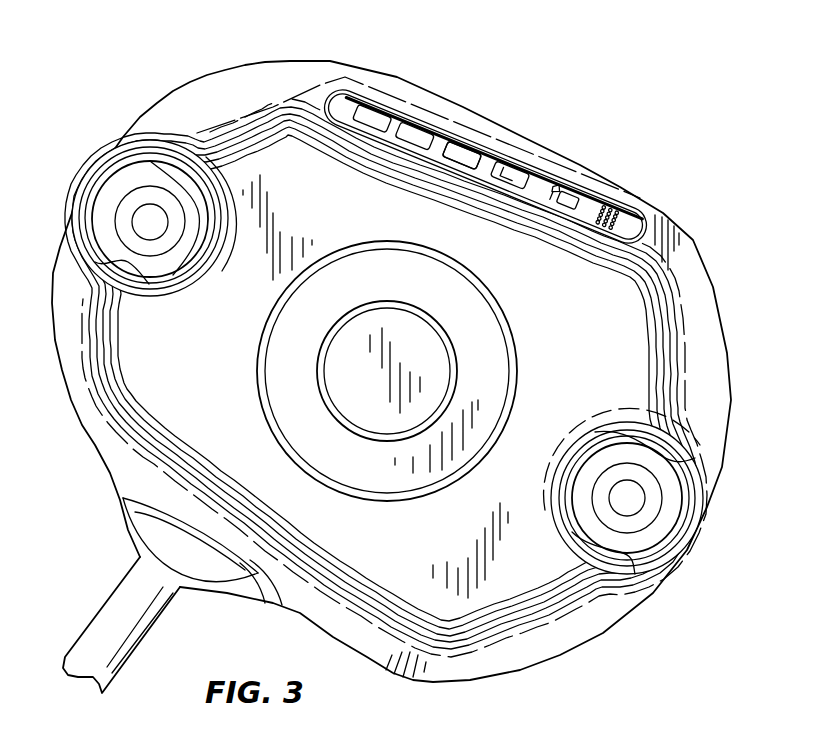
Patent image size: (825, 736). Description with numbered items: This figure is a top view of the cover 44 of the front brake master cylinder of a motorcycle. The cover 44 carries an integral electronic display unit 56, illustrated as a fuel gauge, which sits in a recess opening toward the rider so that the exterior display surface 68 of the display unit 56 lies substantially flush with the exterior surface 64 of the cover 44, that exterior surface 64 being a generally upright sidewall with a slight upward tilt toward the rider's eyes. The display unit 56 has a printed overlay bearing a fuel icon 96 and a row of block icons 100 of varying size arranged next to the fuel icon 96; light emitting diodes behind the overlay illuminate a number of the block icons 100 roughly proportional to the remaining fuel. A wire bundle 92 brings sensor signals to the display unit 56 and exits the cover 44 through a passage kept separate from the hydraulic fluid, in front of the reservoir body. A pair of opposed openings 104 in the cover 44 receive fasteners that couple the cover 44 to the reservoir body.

The cover 44 is at (714, 177).
The electronic display unit 56 is at (448, 110).
The exterior surface 64 is at (313, 103).
The exterior display surface 68 is at (472, 148).
The wire bundle 92 is at (122, 600).
The fuel icon 96 is at (573, 195).
The block icons 100 is at (505, 182).
The opposed openings 104 is at (147, 216).